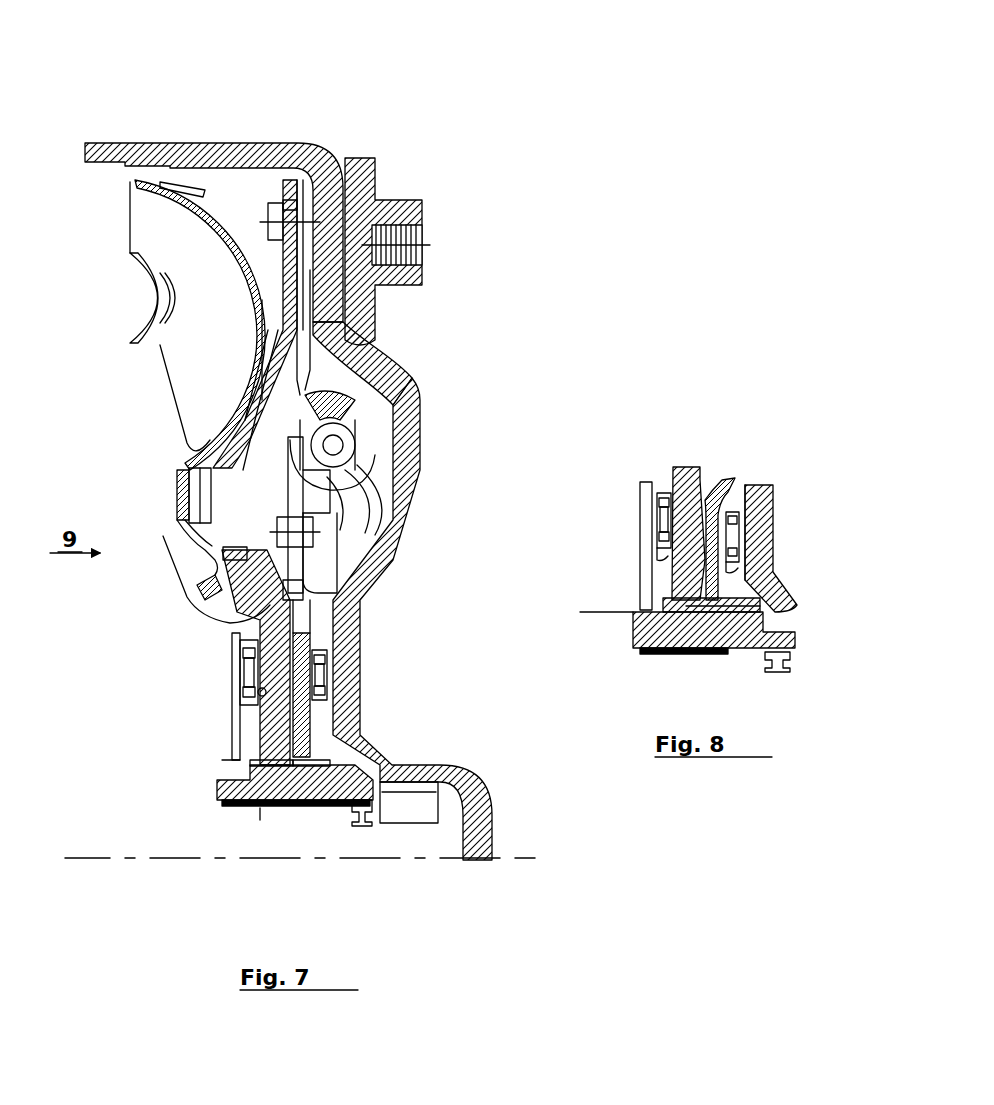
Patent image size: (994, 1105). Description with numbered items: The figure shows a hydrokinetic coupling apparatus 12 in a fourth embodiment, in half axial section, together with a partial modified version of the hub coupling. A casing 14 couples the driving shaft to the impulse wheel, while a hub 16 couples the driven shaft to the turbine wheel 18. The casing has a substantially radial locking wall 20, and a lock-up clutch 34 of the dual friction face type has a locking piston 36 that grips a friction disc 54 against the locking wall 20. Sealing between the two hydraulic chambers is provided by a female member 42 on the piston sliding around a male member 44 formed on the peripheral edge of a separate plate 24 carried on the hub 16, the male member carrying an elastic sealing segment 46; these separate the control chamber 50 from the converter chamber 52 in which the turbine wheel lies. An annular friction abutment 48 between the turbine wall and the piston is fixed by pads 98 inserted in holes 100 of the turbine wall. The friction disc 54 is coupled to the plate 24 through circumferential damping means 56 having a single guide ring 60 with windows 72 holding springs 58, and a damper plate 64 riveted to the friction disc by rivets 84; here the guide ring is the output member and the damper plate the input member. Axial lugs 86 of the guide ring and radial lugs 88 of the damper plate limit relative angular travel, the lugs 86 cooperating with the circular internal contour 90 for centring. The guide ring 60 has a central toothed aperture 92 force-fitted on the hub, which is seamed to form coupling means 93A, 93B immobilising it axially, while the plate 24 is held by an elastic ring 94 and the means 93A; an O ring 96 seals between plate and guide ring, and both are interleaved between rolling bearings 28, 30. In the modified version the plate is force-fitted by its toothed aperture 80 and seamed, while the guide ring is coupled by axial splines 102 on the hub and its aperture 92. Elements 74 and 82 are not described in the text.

In FIG. 7, the hydrokinetic coupling apparatus 12 is at (352, 110).
In FIG. 7, the casing 14 is at (214, 138).
In FIG. 8, the casing 14 is at (778, 490).
In FIG. 7, the hub 16 is at (218, 808).
In FIG. 8, the hub 16 is at (630, 650).
In FIG. 7, the turbine wheel 18 is at (243, 278).
In FIG. 7, the locking wall 20 is at (418, 400).
In FIG. 8, the locking wall 20 is at (775, 545).
In FIG. 7, the plate 24 is at (250, 623).
In FIG. 8, the plate 24 is at (690, 472).
In FIG. 7, the rolling bearing 28 is at (320, 680).
In FIG. 7, the rolling bearing 30 is at (240, 662).
In FIG. 7, the lock-up clutch 34 is at (264, 248).
In FIG. 7, the locking piston 36 is at (287, 322).
In FIG. 7, the female member 42 is at (250, 538).
In FIG. 7, the male member 44 is at (240, 576).
In FIG. 7, the sealing segment 46 is at (230, 566).
In FIG. 7, the friction abutment 48 is at (205, 532).
In FIG. 7, the control chamber 50 is at (365, 528).
In FIG. 7, the converter chamber 52 is at (207, 440).
In FIG. 7, the friction disc 54 is at (300, 375).
In FIG. 7, the circumferential damping means 56 is at (360, 318).
In FIG. 7, the springs 58 is at (398, 472).
In FIG. 7, the guide ring 60 is at (372, 396).
In FIG. 8, the guide ring 60 is at (714, 488).
In FIG. 7, the damper plate 64 is at (243, 602).
In FIG. 7, the windows 72 is at (380, 441).
In FIG. 7, the lever arm 74 is at (280, 432).
In FIG. 7, the aperture 80 is at (255, 770).
In FIG. 8, the aperture 80 is at (690, 620).
In FIG. 7, the spacer 82 is at (265, 805).
In FIG. 7, the rivets 84 is at (343, 557).
In FIG. 7, the angular abutment elements 86 is at (300, 625).
In FIG. 7, the angular abutment elements 88 is at (330, 640).
In FIG. 7, the internal contour 90 is at (360, 590).
In FIG. 7, the aperture 92 is at (315, 805).
In FIG. 8, the aperture 92 is at (728, 625).
In FIG. 7, the coupling means 93A is at (300, 806).
In FIG. 7, the coupling means 93B is at (355, 818).
In FIG. 7, the elastic ring 94 is at (232, 733).
In FIG. 7, the O ring 96 is at (258, 696).
In FIG. 7, the pads 98 is at (180, 486).
In FIG. 7, the holes 100 is at (180, 470).
In FIG. 8, the axial splines 102 is at (770, 620).